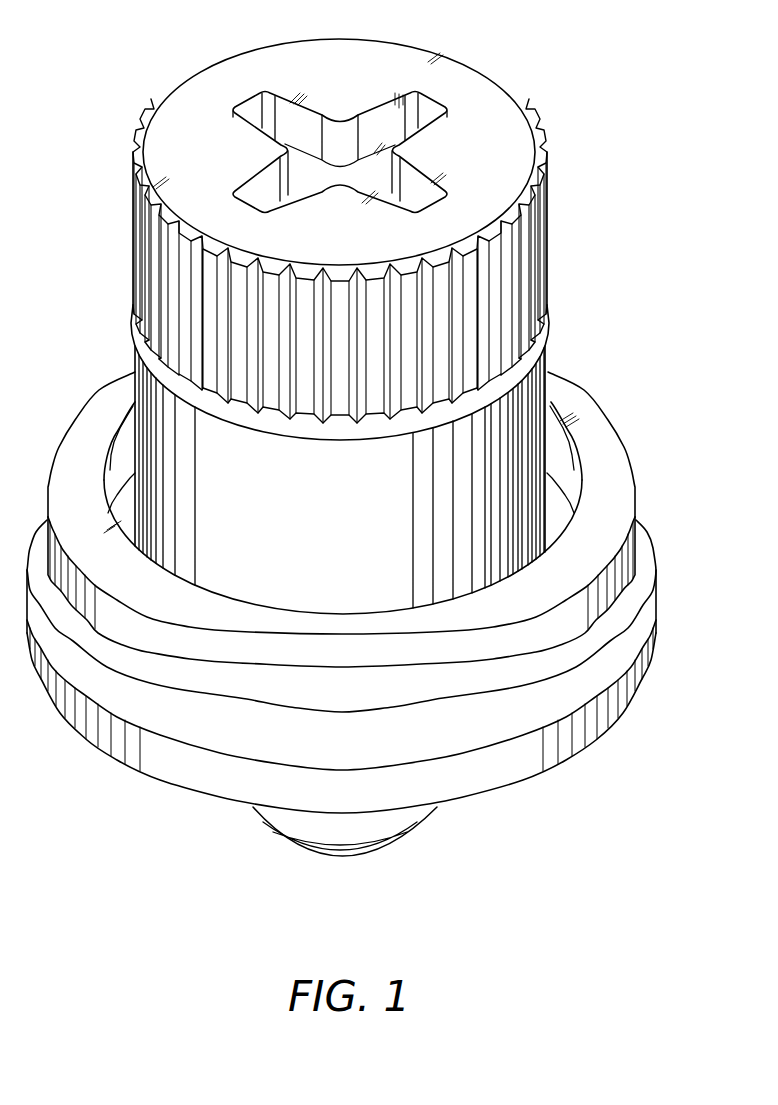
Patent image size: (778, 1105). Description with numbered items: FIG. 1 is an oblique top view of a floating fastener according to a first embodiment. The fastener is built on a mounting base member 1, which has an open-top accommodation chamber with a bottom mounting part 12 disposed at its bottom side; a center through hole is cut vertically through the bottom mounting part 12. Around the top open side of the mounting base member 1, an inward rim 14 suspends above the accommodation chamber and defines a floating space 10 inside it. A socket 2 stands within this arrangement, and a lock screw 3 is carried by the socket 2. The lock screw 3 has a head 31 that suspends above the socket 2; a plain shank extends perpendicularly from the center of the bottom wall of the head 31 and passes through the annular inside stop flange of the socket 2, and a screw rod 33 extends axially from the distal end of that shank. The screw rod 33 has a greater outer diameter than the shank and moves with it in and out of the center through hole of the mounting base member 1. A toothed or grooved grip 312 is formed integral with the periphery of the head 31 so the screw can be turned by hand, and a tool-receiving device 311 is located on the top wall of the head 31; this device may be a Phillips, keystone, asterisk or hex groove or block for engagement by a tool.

The mounting base member 1 is at (364, 592).
The floating space 10 is at (575, 441).
The bottom mounting part 12 is at (612, 723).
The inward rim 14 is at (597, 460).
The socket 2 is at (150, 410).
The lock screw 3 is at (306, 234).
The head 31 is at (163, 137).
The tool-receiving device 311 is at (262, 192).
The toothed grip 312 is at (155, 233).
The screw rod 33 is at (333, 832).